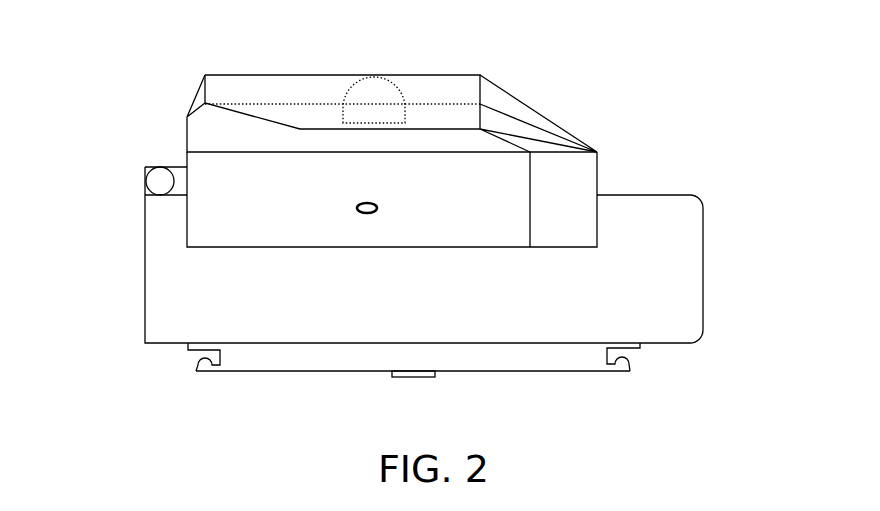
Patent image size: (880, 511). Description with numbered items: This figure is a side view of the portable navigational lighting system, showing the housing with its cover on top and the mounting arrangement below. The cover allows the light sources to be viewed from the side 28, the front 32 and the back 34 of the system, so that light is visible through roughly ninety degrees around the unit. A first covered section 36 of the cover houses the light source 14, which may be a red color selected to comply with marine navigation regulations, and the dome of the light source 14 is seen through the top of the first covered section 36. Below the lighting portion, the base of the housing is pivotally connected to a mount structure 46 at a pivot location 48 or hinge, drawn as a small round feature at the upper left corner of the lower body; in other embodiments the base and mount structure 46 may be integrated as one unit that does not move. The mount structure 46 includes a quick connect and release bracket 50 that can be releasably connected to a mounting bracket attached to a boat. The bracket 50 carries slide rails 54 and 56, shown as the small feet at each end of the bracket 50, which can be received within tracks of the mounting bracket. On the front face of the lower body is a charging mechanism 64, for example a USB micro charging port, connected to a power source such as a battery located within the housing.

The light source 14 is at (340, 71).
The side 28 is at (453, 229).
The front 32 is at (470, 222).
The back 34 is at (329, 100).
The first covered section 36 is at (432, 75).
The mount structure 46 is at (533, 372).
The pivot location 48 is at (160, 170).
The quick connect and release bracket 50 is at (295, 372).
The slide rail 54 is at (193, 358).
The slide rail 56 is at (640, 362).
The charging mechanism 64 is at (314, 188).